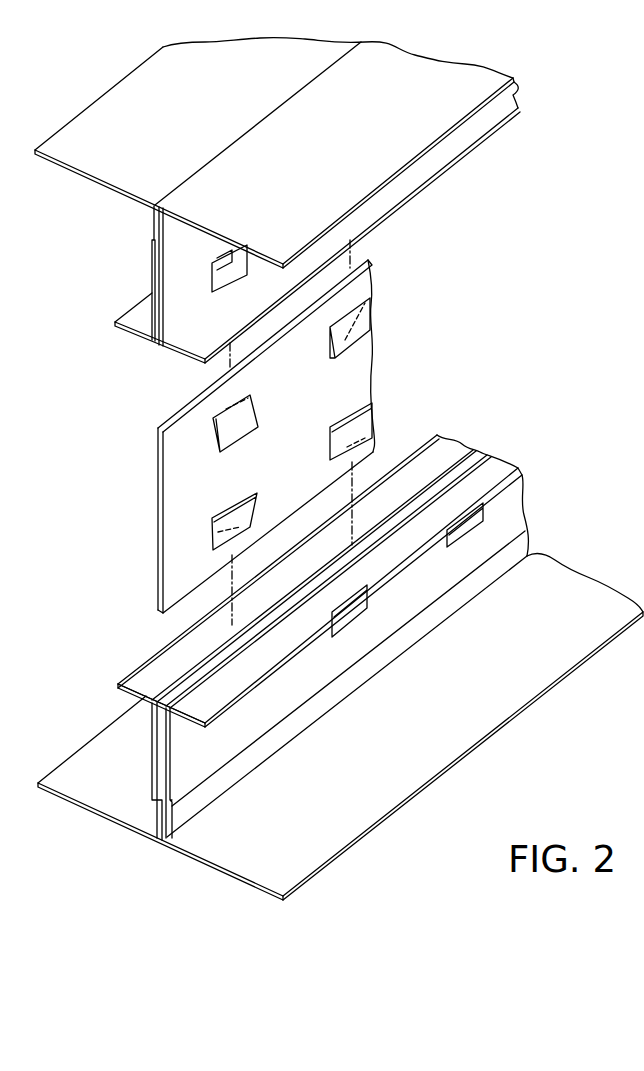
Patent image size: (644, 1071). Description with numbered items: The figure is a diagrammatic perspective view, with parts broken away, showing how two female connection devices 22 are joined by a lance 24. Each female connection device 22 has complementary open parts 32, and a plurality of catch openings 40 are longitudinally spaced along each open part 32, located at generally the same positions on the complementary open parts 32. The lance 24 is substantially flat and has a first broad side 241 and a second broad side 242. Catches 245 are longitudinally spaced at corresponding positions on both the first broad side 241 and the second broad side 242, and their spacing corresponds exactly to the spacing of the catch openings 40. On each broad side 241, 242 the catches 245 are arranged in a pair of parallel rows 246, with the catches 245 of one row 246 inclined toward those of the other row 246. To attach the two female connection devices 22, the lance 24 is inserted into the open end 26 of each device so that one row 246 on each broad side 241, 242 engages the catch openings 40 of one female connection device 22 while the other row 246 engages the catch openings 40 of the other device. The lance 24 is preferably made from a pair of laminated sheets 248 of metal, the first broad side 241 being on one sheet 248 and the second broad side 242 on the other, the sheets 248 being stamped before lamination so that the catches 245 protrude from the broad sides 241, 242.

The female connection device 22 is at (512, 131).
The lance 24 is at (248, 432).
The open end 26 is at (181, 683).
The open part 32 is at (151, 278).
The catch opening 40 is at (221, 262).
The first broad side 241 is at (310, 451).
The second broad side 242 is at (157, 438).
The catch 245 is at (373, 301).
The row 246 is at (207, 452).
The laminated sheet 248 is at (370, 266).